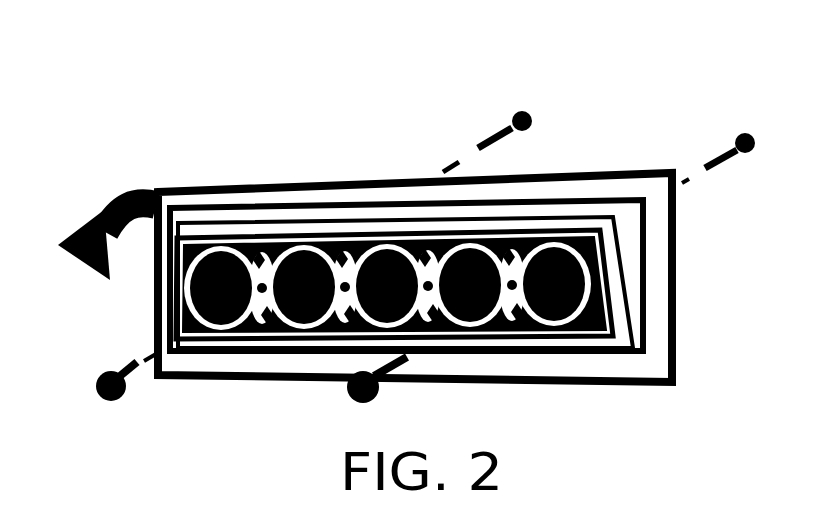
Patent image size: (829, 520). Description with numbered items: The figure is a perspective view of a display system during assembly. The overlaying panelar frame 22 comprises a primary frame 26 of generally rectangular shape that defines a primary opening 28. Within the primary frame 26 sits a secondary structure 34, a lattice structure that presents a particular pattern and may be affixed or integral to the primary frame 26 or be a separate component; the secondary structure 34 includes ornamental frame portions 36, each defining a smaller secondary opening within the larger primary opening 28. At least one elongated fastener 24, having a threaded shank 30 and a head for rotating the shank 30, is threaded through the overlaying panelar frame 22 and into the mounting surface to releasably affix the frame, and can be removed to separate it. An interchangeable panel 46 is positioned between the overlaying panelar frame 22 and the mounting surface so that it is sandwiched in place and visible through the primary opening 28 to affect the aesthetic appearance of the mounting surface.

The overlaying panelar frame 22 is at (290, 212).
The elongated fastener 24 is at (522, 108).
The primary frame 26 is at (564, 214).
The primary opening 28 is at (376, 359).
The threaded shank 30 is at (493, 132).
The secondary structure 34 is at (268, 328).
The ornamental frame portion 36 is at (505, 322).
The interchangeable panel 46 is at (217, 274).